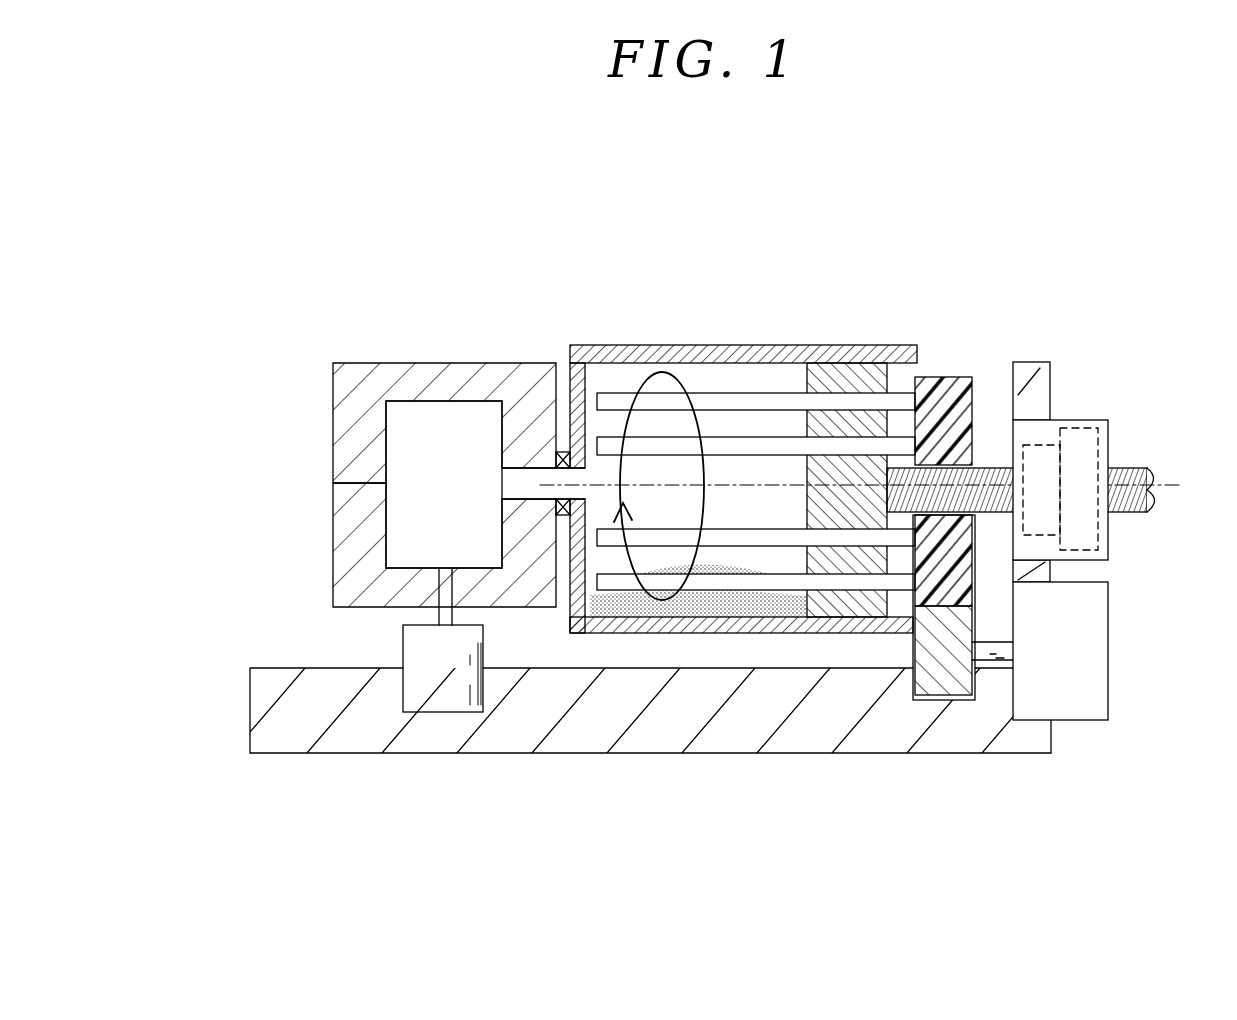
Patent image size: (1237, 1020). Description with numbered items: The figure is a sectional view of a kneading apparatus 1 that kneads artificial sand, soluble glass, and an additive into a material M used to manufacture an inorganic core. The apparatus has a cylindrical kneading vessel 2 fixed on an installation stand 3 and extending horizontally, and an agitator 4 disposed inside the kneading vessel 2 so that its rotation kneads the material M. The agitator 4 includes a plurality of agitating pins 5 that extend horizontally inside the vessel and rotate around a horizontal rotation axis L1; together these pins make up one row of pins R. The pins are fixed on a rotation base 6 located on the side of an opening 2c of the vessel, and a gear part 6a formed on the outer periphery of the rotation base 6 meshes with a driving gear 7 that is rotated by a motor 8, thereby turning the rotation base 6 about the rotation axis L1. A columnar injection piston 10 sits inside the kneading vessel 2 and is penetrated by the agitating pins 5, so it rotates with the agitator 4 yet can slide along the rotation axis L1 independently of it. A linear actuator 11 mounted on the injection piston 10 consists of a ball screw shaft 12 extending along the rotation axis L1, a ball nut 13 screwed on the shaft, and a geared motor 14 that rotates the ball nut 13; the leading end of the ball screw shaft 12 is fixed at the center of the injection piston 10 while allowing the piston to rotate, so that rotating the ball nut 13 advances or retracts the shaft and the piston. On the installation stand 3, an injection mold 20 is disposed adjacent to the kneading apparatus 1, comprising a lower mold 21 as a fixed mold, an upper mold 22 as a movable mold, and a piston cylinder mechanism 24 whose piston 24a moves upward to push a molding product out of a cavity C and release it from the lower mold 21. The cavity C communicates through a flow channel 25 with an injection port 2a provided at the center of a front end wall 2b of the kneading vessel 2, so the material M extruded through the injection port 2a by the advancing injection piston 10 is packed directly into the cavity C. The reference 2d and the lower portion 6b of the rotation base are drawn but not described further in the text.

The kneading apparatus 1 is at (963, 226).
The kneading vessel 2 is at (758, 347).
The injection port 2a is at (607, 373).
The front end wall 2b is at (560, 355).
The opening 2c is at (905, 605).
The inner wall of housing 2d is at (600, 375).
The installation stand 3 is at (500, 735).
The agitator 4 is at (917, 176).
The agitating pins 5 is at (797, 345).
The rotation base 6 is at (944, 396).
The gear part 6a is at (950, 380).
The lower gear portion 6b is at (945, 525).
The driving gear 7 is at (957, 697).
The motor 8 is at (1072, 720).
The injection piston 10 is at (826, 635).
The linear actuator 11 is at (1118, 545).
The ball screw shaft 12 is at (1000, 466).
The ball nut 13 is at (1042, 445).
The geared motor 14 is at (1090, 420).
The injection mold 20 is at (400, 402).
The lower mold 21 is at (333, 522).
The upper mold 22 is at (333, 396).
The piston cylinder mechanism 24 is at (385, 720).
The piston 24a is at (443, 588).
The flow channel 25 is at (515, 490).
The cavity C is at (441, 410).
The material M is at (697, 605).
The row of pins R is at (740, 385).
The rotation axis L1 is at (1160, 478).